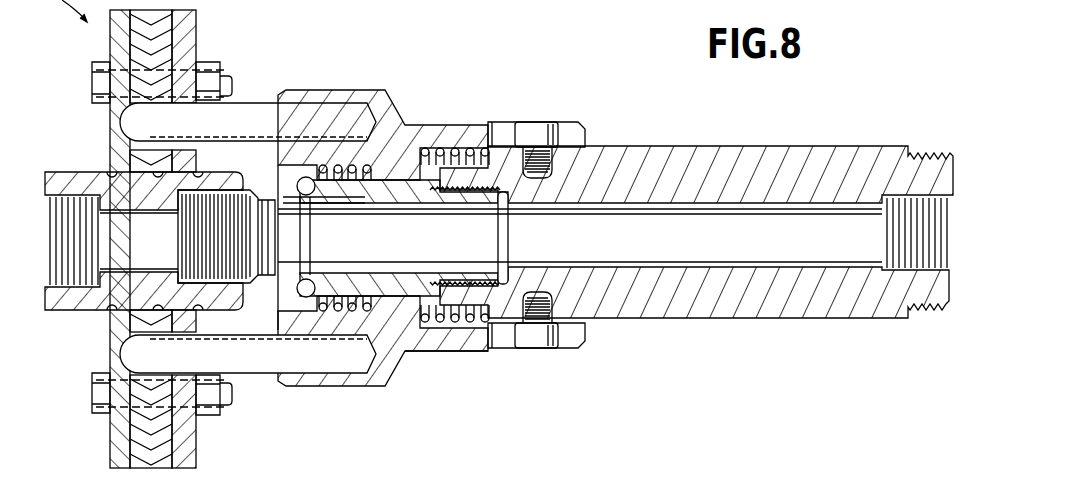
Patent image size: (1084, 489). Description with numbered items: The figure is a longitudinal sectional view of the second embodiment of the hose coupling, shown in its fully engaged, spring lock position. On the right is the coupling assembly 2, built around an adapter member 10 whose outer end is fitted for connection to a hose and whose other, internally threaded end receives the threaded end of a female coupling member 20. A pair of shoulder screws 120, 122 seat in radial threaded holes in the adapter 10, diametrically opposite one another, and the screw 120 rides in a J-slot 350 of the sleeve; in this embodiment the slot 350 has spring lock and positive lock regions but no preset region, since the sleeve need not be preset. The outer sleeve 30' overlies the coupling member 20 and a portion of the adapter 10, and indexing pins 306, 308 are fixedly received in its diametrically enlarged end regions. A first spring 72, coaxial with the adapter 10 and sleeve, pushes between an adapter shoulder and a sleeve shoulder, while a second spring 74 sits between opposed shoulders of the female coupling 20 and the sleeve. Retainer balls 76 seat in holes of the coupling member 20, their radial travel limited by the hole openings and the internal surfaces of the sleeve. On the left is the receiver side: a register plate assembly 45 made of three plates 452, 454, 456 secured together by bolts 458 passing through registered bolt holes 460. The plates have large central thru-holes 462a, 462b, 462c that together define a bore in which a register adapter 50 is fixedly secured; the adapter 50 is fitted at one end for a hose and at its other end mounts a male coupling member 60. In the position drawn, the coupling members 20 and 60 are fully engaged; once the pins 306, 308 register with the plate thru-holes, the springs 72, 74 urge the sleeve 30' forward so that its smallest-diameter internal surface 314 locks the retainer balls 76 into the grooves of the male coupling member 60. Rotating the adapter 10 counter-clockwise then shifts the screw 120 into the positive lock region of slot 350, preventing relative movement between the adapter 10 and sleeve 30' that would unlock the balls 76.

The coupling assembly 2 is at (692, 121).
The adapter member 10 is at (743, 319).
The female coupling member 20 is at (412, 294).
The sleeve 30' is at (446, 366).
The register plate assembly 45 is at (210, 249).
The register adapter 50 is at (89, 317).
The male coupling member 60 is at (214, 226).
The first spring 72 is at (470, 333).
The second spring 74 is at (368, 292).
The retainer balls 76 is at (284, 302).
The shoulder screw 120 is at (540, 132).
The shoulder screw 122 is at (532, 338).
The indexing pin 306 is at (296, 108).
The indexing pin 308 is at (330, 383).
The internal axial surface 314 is at (302, 177).
The J-slot 350 is at (502, 130).
The plate 452 is at (190, 428).
The plate 454 is at (169, 452).
The plate 456 is at (123, 442).
The bolts 458 is at (100, 68).
The bolt holes 460 is at (148, 62).
The central thru-hole 462a is at (200, 170).
The central thru-hole 462b is at (159, 170).
The central thru-hole 462c is at (109, 170).